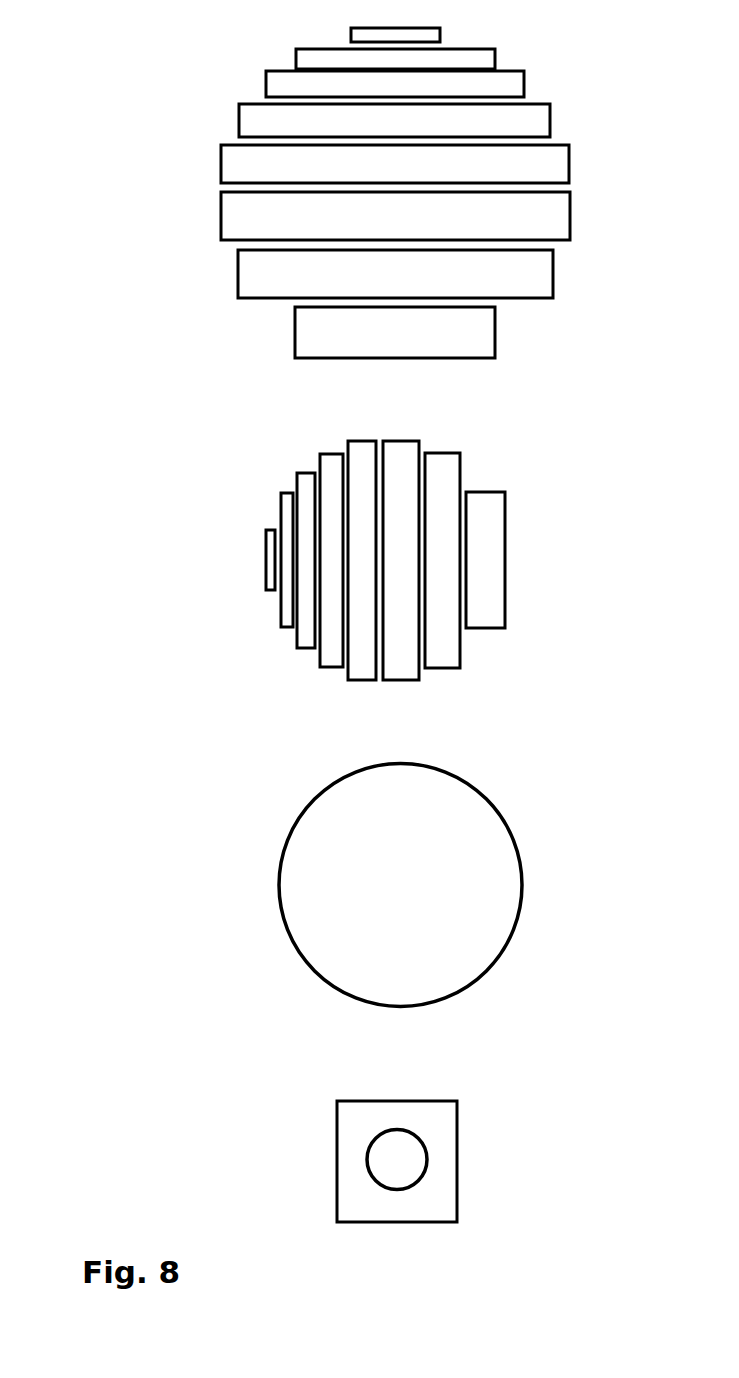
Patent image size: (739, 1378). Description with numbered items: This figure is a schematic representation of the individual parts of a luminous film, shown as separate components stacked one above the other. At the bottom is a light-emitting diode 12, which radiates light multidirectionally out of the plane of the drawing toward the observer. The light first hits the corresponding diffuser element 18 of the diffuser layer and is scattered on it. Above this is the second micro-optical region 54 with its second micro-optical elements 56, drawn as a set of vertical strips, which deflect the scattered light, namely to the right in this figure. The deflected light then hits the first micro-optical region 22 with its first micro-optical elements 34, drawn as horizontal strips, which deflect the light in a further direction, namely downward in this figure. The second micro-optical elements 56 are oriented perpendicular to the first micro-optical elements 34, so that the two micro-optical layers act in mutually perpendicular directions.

The light-emitting diode 12 is at (367, 1159).
The diffuser element 18 is at (278, 884).
The first micro-optical region 22 is at (173, 195).
The first micro-optical elements 34 is at (370, 36).
The second micro-optical region 54 is at (243, 613).
The second micro-optical elements 56 is at (363, 447).